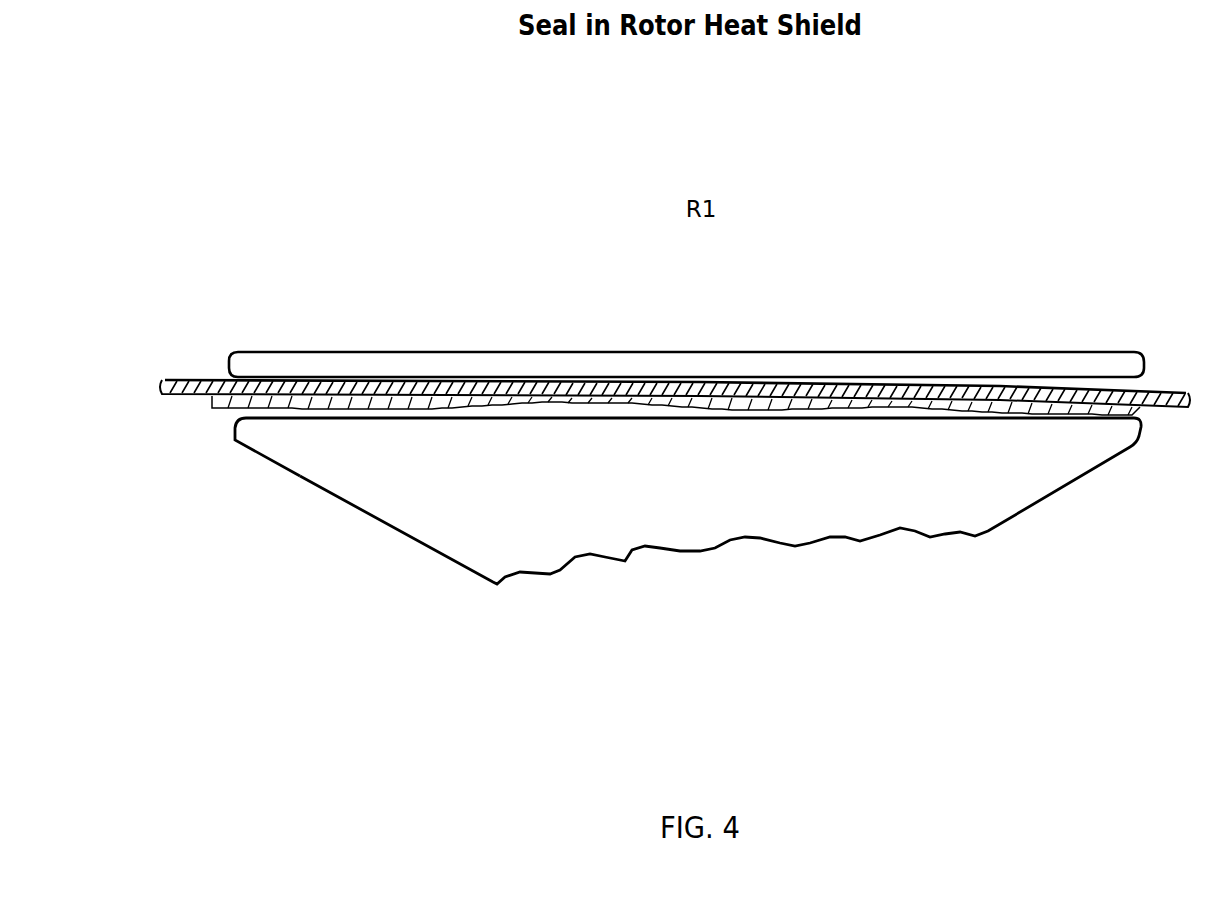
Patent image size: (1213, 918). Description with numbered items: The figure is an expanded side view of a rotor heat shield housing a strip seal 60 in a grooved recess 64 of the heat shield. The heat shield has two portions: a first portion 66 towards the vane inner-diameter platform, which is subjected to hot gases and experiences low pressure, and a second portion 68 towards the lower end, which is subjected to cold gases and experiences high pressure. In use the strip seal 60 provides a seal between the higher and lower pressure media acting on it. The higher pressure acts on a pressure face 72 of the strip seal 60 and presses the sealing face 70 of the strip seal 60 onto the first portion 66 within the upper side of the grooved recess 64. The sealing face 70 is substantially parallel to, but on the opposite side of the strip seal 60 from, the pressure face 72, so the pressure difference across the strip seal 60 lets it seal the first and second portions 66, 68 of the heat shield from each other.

The strip seal 60 is at (172, 369).
The grooved recess 64 is at (225, 434).
The first portion 66 is at (449, 349).
The second portion 68 is at (818, 522).
The sealing face 70 is at (1068, 384).
The pressure face 72 is at (1052, 423).